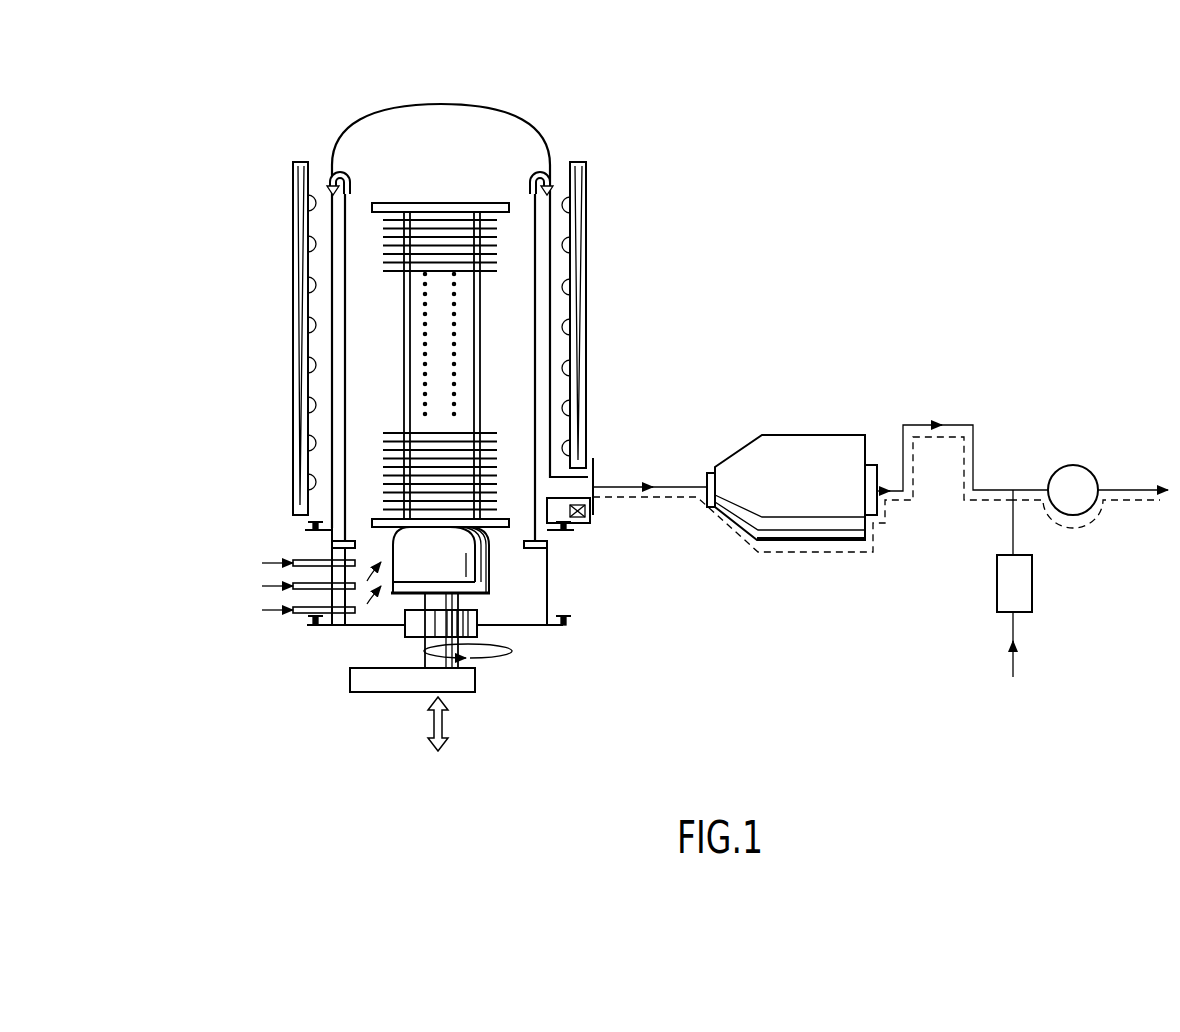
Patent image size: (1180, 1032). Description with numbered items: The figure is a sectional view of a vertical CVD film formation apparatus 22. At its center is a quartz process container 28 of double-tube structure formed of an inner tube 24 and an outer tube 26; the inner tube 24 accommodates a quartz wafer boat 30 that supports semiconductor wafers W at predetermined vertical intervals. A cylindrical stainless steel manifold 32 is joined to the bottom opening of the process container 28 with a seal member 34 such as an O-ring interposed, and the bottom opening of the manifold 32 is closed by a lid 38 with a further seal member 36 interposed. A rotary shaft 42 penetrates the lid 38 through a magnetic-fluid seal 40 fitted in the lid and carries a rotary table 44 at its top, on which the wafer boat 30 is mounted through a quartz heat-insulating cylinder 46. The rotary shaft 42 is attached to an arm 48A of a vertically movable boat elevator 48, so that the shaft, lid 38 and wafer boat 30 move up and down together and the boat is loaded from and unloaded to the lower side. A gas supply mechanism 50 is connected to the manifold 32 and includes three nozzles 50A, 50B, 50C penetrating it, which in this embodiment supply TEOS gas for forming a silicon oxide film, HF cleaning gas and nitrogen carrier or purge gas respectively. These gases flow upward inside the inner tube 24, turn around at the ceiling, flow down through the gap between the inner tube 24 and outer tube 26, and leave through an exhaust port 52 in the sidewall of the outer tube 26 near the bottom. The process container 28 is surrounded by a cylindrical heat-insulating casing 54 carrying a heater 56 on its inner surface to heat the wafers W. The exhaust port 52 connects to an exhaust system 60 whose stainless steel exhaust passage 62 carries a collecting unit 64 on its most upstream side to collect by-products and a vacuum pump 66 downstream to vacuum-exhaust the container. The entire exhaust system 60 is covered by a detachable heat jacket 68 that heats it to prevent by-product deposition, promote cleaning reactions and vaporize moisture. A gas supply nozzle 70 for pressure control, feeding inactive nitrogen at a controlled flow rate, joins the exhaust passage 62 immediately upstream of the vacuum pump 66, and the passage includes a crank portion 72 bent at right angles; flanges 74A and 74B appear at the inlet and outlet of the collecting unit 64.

The film formation apparatus 22 is at (446, 834).
The inner tube 24 is at (537, 216).
The outer tube 26 is at (550, 232).
The process container 28 is at (655, 196).
The wafer boat 30 is at (482, 300).
The semiconductor wafers W is at (497, 262).
The manifold 32 is at (549, 610).
The seal member 34 is at (573, 522).
The seal member 36 is at (566, 623).
The lid 38 is at (544, 631).
The magnetic-fluid seal 40 is at (479, 633).
The rotary shaft 42 is at (425, 656).
The rotary table 44 is at (490, 588).
The heat-insulating cylinder 46 is at (490, 556).
The boat elevator 48 is at (463, 703).
The arm 48A is at (476, 685).
The gas supply mechanism 50 is at (256, 655).
The nozzle 50A is at (306, 560).
The nozzle 50B is at (313, 589).
The nozzle 50C is at (343, 613).
The exhaust port 52 is at (594, 486).
The heat-insulating casing 54 is at (578, 160).
The heater 56 is at (313, 323).
The exhaust system 60 is at (803, 575).
The exhaust passage 62 is at (684, 494).
The collecting unit 64 is at (801, 426).
The vacuum pump 66 is at (1073, 465).
The heat jacket 68 is at (667, 504).
The gas supply nozzle 70 is at (1015, 530).
The crank portion 72 is at (971, 418).
The inlet flange 74A is at (707, 480).
The outlet flange 74B is at (885, 505).